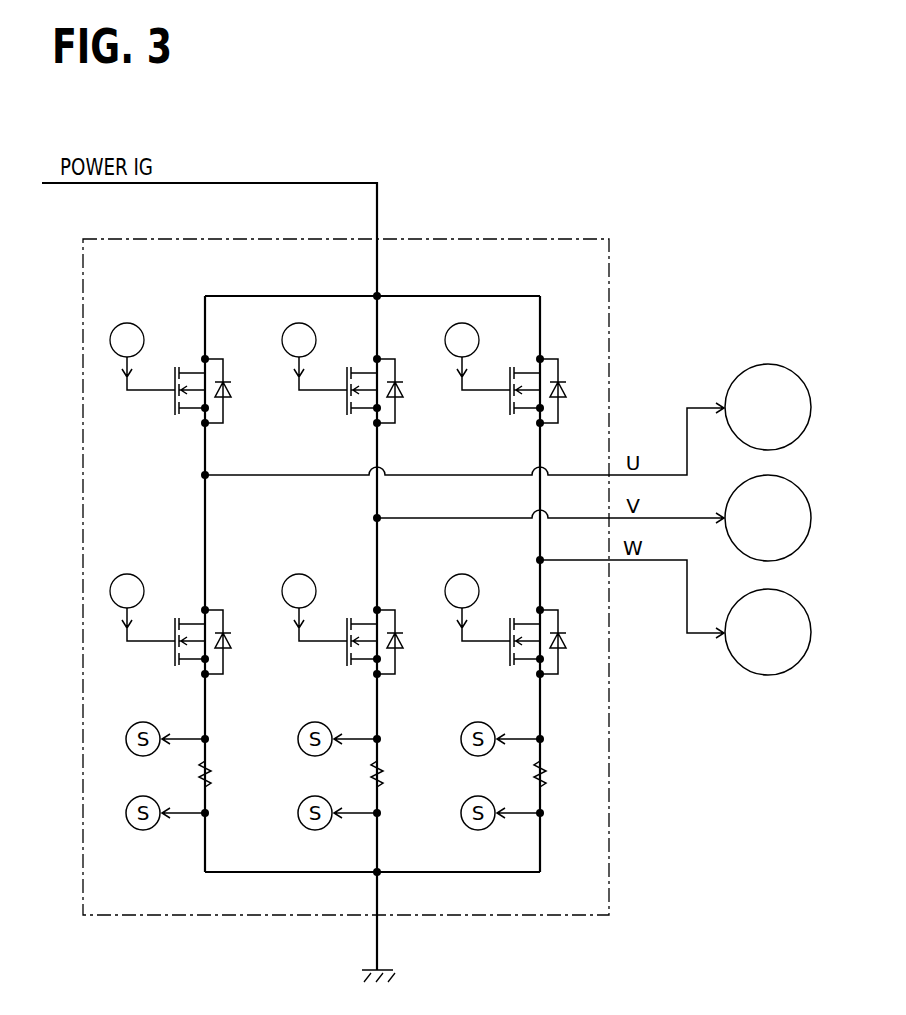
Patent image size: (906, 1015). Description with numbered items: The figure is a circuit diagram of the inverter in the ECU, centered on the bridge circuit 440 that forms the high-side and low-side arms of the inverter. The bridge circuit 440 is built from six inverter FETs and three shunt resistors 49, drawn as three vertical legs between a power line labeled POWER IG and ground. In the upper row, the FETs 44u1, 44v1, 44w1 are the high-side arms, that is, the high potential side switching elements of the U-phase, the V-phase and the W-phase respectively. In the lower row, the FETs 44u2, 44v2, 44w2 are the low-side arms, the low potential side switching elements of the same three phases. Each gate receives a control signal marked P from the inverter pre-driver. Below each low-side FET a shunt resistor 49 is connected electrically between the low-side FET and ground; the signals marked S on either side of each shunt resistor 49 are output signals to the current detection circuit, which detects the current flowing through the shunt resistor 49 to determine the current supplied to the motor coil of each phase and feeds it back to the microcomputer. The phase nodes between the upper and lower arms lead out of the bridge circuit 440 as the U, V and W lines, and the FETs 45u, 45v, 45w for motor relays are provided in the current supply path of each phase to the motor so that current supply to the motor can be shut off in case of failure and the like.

The bridge circuit 440 is at (530, 239).
The FET 44u1 is at (190, 412).
The FET 44v1 is at (362, 412).
The FET 44w1 is at (525, 412).
The FET 44u2 is at (192, 622).
The FET 44v2 is at (364, 622).
The FET 44w2 is at (527, 622).
The shunt resistor 49 is at (573, 782).
The FET for motor relay 45u is at (782, 364).
The FET for motor relay 45v is at (782, 475).
The FET for motor relay 45w is at (782, 589).